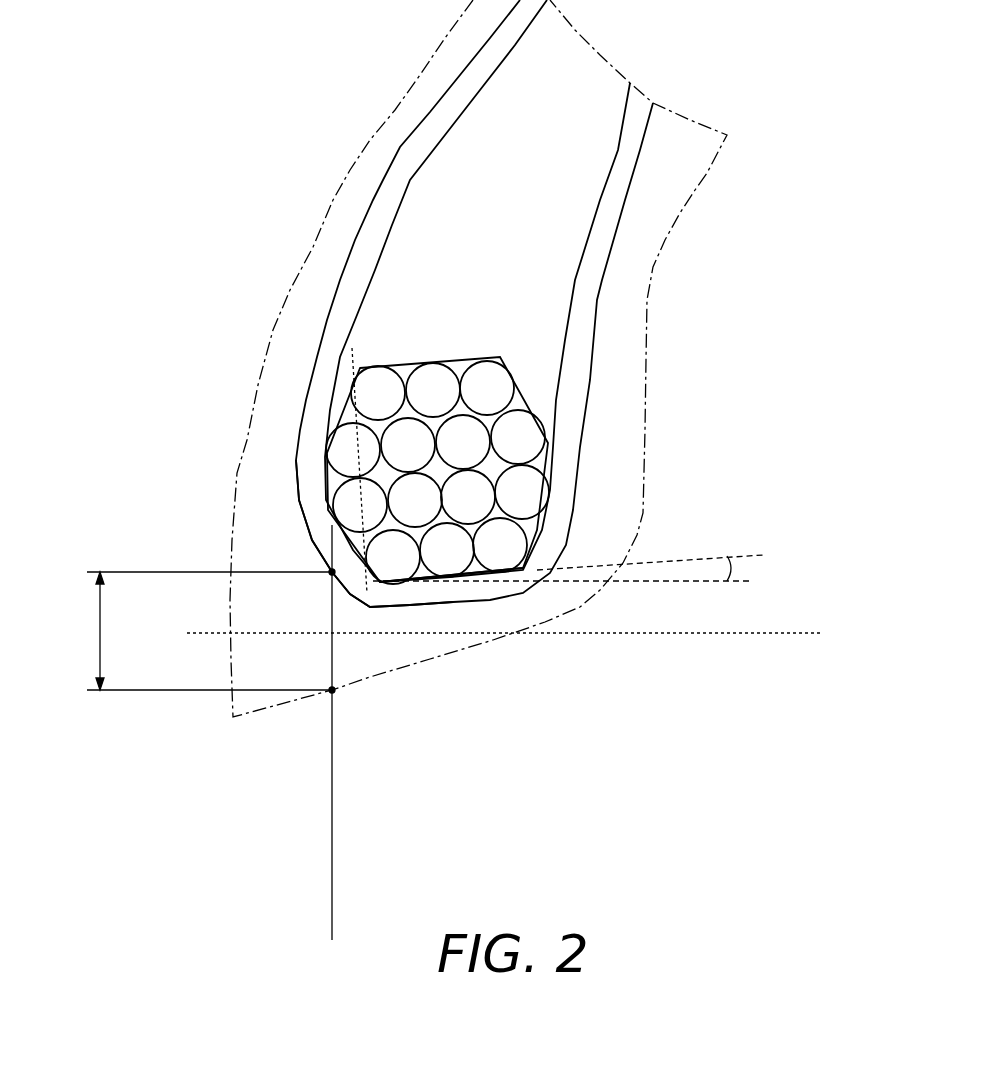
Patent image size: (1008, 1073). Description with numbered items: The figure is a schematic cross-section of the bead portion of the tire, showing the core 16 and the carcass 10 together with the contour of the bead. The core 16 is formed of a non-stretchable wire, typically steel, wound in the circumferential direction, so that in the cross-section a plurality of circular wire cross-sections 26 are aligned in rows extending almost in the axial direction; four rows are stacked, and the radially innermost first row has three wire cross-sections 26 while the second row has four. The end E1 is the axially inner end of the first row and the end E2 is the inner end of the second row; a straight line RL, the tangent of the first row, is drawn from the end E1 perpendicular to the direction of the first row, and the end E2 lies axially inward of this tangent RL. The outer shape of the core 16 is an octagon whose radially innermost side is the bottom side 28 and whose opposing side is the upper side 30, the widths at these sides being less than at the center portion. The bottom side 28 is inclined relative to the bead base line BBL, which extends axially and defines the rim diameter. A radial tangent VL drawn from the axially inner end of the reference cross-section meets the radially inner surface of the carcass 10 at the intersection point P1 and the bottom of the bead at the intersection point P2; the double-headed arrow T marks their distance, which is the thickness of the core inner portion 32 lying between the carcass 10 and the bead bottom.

The carcass 10 is at (413, 153).
The core 16 is at (555, 453).
The wire cross-sections 26 is at (497, 380).
The bottom side 28 is at (483, 573).
The upper side 30 is at (453, 360).
The core inner portion 32 is at (347, 622).
The tangent of the first row RL is at (357, 355).
The tangent VL is at (332, 892).
The bead base line BBL is at (698, 635).
The intersection point P1 is at (332, 572).
The intersection point P2 is at (332, 690).
The thickness T is at (85, 631).
The inner end of the first row E1 is at (367, 553).
The inner end of the second row E2 is at (330, 503).